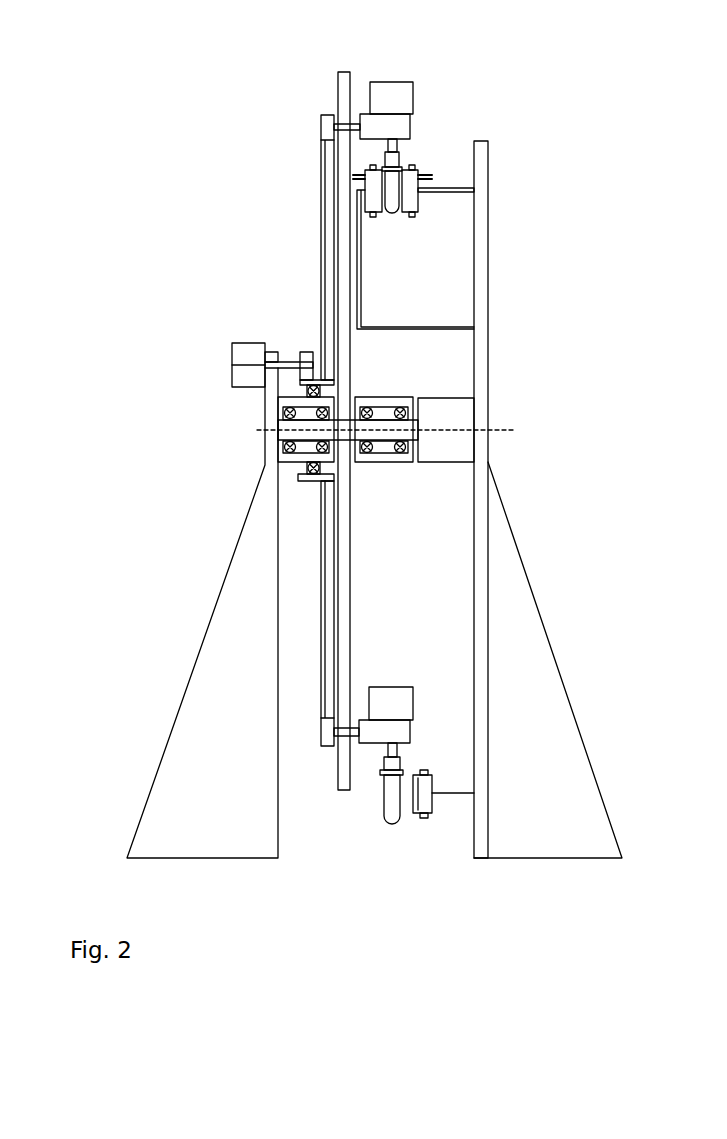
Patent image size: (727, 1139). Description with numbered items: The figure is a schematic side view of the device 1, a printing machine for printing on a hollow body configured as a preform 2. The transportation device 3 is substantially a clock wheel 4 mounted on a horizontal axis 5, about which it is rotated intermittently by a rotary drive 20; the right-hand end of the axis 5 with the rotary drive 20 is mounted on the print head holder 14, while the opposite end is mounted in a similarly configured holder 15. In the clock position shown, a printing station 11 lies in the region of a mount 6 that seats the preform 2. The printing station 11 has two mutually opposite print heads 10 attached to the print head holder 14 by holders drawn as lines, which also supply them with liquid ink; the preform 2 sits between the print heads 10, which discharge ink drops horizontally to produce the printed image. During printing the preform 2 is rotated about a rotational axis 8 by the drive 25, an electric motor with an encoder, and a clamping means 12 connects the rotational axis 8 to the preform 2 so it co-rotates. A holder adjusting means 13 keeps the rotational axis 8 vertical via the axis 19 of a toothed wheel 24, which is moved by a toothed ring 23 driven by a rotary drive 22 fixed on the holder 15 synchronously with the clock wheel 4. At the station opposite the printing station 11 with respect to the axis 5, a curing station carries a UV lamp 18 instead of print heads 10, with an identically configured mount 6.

The device 1 is at (218, 497).
The preform 2 is at (395, 205).
The transportation device 3 is at (253, 140).
The clock wheel 4 is at (349, 72).
The axis 5 is at (500, 430).
The mount 6 is at (366, 153).
The rotational axis 8 is at (391, 132).
The print heads 10 is at (372, 205).
The printing station 11 is at (447, 208).
The clamping means 12 is at (399, 150).
The holder adjusting means 13 is at (373, 130).
The print head holder 14 is at (480, 322).
The holder 15 is at (232, 614).
The UV lamp 18 is at (432, 786).
The axis 19 is at (342, 122).
The rotary drive 20 is at (438, 410).
The rotary drive 22 is at (242, 343).
The toothed ring 23 is at (325, 257).
The toothed wheel 24 is at (323, 119).
The drive 25 is at (402, 82).